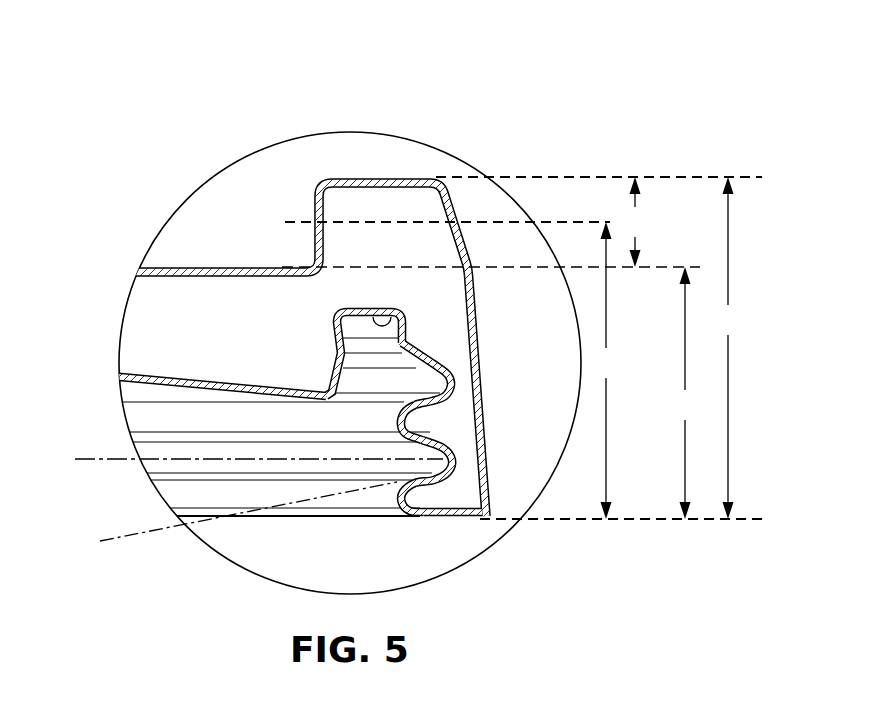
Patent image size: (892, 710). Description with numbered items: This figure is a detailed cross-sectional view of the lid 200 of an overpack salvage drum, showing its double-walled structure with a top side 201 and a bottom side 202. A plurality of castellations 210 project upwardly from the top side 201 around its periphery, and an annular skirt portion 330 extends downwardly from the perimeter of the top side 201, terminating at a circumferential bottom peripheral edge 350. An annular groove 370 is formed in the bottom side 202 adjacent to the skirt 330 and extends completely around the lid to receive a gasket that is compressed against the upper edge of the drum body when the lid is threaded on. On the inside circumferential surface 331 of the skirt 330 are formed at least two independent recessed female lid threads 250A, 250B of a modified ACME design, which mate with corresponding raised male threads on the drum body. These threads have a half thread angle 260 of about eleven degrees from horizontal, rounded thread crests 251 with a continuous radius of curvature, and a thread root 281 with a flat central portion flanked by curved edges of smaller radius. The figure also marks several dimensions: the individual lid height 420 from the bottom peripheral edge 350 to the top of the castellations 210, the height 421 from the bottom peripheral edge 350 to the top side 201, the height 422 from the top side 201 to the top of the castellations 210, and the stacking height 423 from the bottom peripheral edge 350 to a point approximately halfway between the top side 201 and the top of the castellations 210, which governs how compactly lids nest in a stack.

The lid 200 is at (453, 228).
The top side 201 is at (229, 255).
The bottom side 202 is at (207, 400).
The castellations 210 is at (376, 178).
The lid thread 250A is at (481, 385).
The lid thread 250B is at (485, 460).
The thread crest 251 is at (382, 419).
The half thread angle 260 is at (123, 523).
The thread root 281 is at (421, 369).
The annular skirt portion 330 is at (480, 416).
The inside circumferential surface 331 is at (382, 366).
The bottom peripheral edge 350 is at (457, 519).
The annular groove 370 is at (388, 312).
The lid height 420 is at (622, 348).
The height 421 is at (494, 393).
The height 422 is at (523, 222).
The stacking height 423 is at (607, 370).